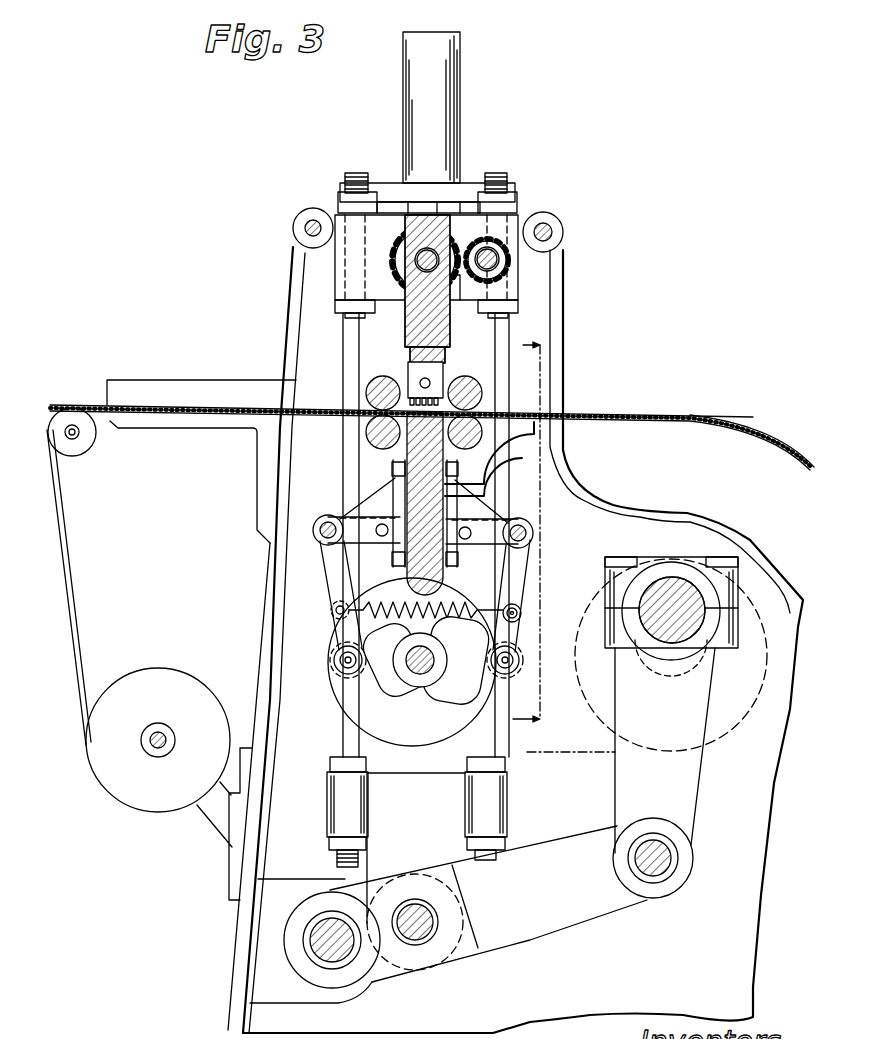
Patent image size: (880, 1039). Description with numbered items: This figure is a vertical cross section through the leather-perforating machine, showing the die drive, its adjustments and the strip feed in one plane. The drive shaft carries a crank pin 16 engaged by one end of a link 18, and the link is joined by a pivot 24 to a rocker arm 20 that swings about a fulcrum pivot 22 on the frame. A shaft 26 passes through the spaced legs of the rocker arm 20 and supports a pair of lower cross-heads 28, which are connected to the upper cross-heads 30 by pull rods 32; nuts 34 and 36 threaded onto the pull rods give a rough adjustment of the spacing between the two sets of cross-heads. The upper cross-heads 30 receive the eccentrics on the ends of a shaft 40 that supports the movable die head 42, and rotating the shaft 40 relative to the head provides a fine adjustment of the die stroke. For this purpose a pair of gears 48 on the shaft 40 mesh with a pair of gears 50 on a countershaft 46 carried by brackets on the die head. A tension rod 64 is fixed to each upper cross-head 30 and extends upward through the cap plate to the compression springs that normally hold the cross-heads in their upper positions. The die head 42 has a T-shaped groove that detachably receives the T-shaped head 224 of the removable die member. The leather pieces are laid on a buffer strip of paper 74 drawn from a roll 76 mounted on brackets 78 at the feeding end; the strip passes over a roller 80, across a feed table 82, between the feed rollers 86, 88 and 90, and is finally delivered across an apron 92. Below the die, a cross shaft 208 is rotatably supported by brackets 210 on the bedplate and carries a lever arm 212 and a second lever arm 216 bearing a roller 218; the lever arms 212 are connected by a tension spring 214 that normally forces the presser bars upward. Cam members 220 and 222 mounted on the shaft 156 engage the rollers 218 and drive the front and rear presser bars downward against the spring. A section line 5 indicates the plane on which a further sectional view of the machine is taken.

The section line 5- 5 is at (520, 532).
The crank pin 16 is at (674, 590).
The link 18 is at (705, 762).
The rocker arm 20 is at (452, 904).
The fulcrum pivot 22 is at (338, 955).
The pivot 24 is at (678, 860).
The shaft 26 is at (440, 920).
The lower cross-heads 28 is at (416, 848).
The upper cross-heads 30 is at (522, 224).
The pull rods 32 is at (350, 341).
The nuts 34 is at (497, 765).
The nuts 36 is at (517, 195).
The shaft 40 is at (422, 252).
The movable die head 42 is at (408, 322).
The countershaft 46 is at (485, 252).
The gears 48 is at (402, 272).
The gears 50 is at (500, 278).
The tension rod 64 is at (384, 377).
The buffer strip of paper 74 is at (70, 565).
The roll 76 is at (178, 675).
The brackets 78 is at (203, 820).
The roller 80 is at (93, 444).
The feed table 82 is at (192, 424).
The feed roller 86 is at (368, 432).
The feed roller 88 is at (470, 445).
The feed roller 90 is at (465, 377).
The apron 92 is at (745, 432).
The shaft 156 is at (435, 652).
The cross shaft 208 is at (534, 531).
The brackets 210 is at (358, 505).
The lever arm 212 is at (526, 586).
The tension spring 214 is at (392, 607).
The second lever arm 216 is at (331, 610).
The roller 218 is at (512, 652).
The cam member 220 is at (393, 692).
The cam member 222 is at (449, 692).
The T-shaped head 224 is at (432, 362).